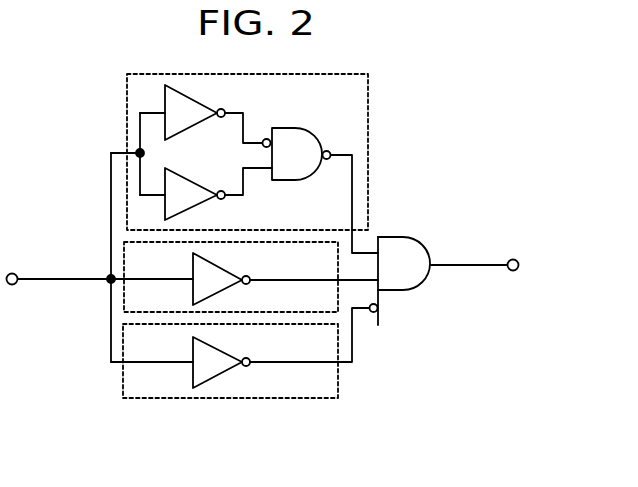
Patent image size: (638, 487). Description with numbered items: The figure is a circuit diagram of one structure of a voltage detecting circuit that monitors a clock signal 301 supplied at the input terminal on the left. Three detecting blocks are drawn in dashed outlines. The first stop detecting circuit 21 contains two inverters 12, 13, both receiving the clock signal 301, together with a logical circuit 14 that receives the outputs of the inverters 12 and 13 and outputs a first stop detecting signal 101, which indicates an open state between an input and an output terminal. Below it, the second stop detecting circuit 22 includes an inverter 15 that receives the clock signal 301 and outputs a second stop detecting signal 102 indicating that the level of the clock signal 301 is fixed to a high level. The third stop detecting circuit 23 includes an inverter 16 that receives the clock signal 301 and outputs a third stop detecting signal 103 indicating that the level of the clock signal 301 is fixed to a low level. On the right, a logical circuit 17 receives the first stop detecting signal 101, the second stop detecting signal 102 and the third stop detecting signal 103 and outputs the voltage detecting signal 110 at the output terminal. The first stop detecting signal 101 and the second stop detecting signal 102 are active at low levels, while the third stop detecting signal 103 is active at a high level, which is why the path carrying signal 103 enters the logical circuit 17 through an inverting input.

The inverter 12 is at (211, 105).
The inverter 13 is at (204, 204).
The logical circuit 14 is at (308, 133).
The inverter 15 is at (192, 257).
The inverter 16 is at (192, 345).
The logical circuit 17 is at (397, 235).
The first stop detecting circuit 21 is at (372, 113).
The second stop detecting circuit 22 is at (120, 290).
The third stop detecting circuit 23 is at (260, 400).
The first stop detecting signal 101 is at (353, 181).
The second stop detecting signal 102 is at (328, 257).
The third stop detecting signal 103 is at (260, 355).
The voltage detecting signal 110 is at (487, 260).
The clock signal 301 is at (57, 273).